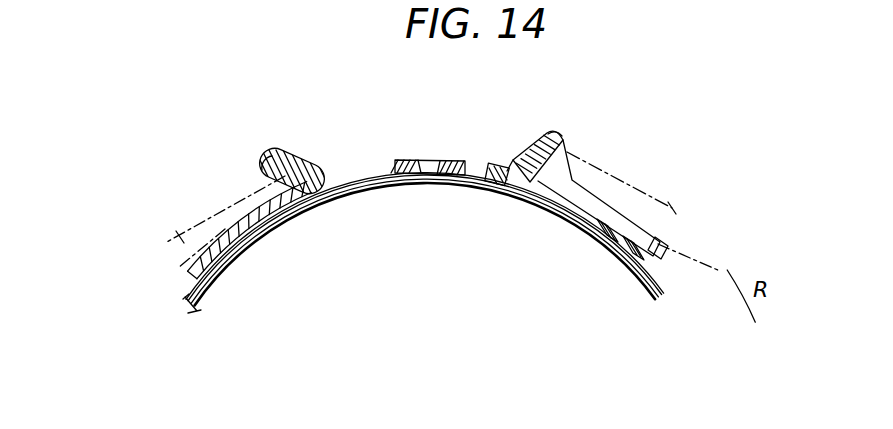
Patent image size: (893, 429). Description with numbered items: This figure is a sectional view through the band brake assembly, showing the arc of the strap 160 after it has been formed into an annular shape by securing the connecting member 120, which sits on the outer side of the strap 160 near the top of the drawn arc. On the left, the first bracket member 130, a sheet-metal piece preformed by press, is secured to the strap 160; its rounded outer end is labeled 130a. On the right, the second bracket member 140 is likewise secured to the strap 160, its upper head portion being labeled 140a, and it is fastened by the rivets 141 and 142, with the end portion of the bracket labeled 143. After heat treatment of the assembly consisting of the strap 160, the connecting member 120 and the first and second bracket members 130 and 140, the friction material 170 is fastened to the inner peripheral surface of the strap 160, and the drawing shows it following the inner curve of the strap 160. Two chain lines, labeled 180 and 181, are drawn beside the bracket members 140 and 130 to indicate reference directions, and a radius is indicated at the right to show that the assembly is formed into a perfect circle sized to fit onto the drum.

The connecting member 120 is at (428, 150).
The first bracket member 130 is at (284, 148).
The head of left mounting member 130a is at (262, 162).
The second bracket member 140 is at (560, 132).
The head of right mounting member 140a is at (565, 136).
The rivet 141 is at (600, 222).
The rivet 142 is at (498, 190).
The end portion of arm 143 is at (665, 243).
The strap 160 is at (203, 293).
The friction material 170 is at (337, 190).
The reference line 180 is at (676, 208).
The reference line 181 is at (181, 236).